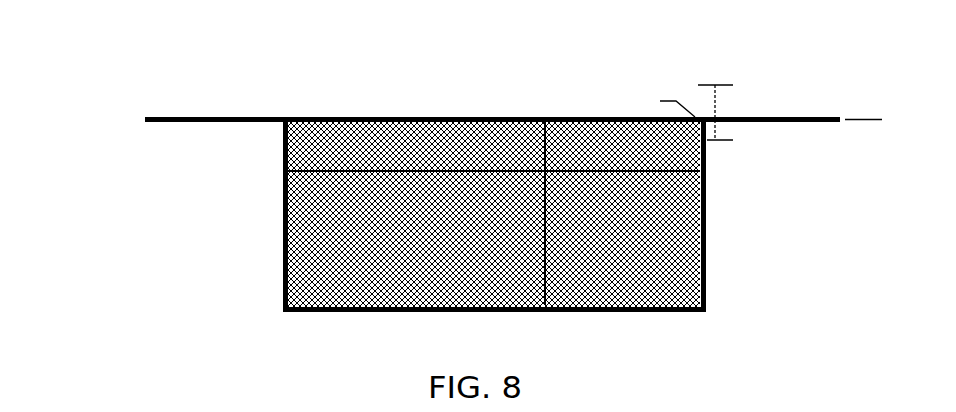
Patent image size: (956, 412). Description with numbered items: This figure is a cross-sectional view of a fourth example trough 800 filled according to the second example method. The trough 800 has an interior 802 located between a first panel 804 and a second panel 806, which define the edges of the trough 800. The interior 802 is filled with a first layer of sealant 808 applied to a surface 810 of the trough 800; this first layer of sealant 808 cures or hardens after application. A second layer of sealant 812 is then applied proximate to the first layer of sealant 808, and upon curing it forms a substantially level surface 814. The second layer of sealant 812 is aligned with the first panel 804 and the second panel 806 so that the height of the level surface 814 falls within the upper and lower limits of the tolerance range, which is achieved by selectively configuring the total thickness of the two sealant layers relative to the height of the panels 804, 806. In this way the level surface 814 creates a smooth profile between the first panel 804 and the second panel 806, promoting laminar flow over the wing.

The fourth example trough 800 is at (114, 72).
The interior 802 is at (453, 105).
The first panel 804 is at (190, 117).
The second panel 806 is at (790, 117).
The first layer of sealant 808 is at (283, 223).
The surface 810 is at (595, 312).
The second layer of sealant 812 is at (283, 137).
The level surface 814 is at (622, 117).